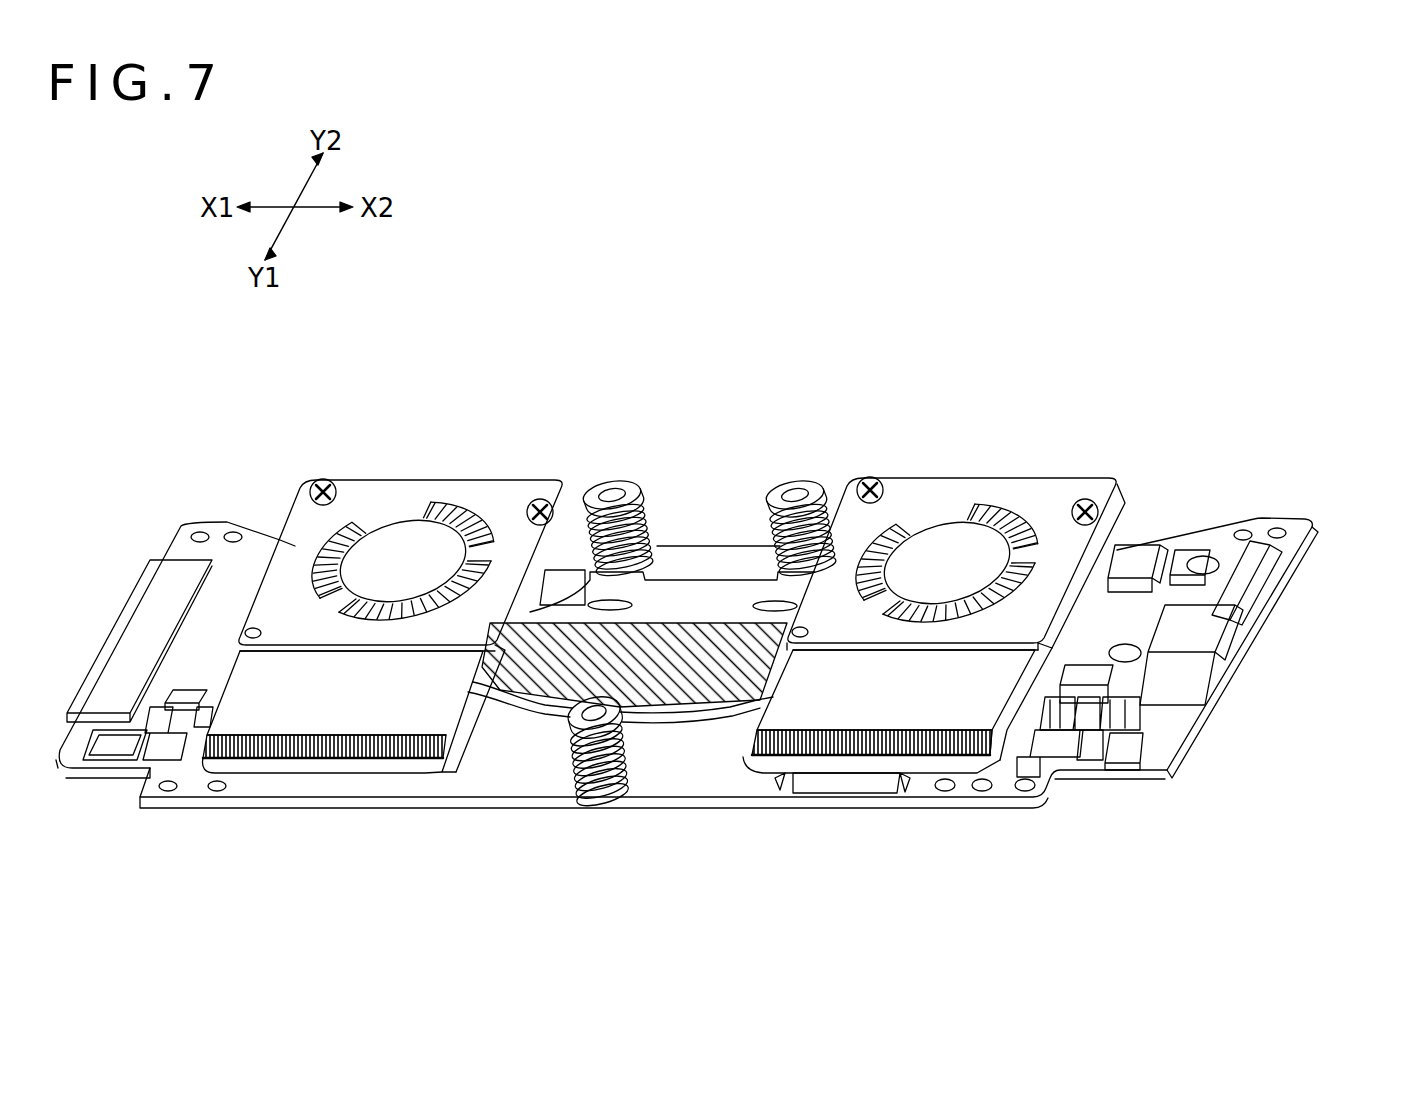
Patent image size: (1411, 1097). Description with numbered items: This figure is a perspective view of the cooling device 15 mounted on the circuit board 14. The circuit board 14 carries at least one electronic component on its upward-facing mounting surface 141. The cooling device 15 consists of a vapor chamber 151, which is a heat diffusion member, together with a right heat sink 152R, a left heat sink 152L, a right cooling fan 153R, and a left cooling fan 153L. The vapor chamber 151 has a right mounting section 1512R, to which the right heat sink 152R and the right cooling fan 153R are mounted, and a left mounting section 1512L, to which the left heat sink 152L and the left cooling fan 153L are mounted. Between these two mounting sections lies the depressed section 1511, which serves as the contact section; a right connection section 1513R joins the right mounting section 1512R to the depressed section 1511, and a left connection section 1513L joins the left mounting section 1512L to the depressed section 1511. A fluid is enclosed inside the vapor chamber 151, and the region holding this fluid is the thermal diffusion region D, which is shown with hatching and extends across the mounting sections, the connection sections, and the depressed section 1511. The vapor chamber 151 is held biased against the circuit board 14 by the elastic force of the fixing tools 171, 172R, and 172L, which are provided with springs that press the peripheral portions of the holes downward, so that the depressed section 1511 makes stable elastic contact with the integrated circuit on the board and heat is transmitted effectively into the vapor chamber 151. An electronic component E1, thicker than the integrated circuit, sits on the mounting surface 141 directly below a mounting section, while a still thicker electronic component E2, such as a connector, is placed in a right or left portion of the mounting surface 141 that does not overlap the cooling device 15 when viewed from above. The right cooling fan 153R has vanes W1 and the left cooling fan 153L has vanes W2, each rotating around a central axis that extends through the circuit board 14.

The circuit board 14 is at (1277, 612).
The cooling device 15 is at (1020, 479).
The mounting surface 141 is at (1117, 562).
The vapor chamber 151 is at (723, 572).
The depressed section 1511 is at (634, 592).
The right mounting section 1512R is at (290, 778).
The left mounting section 1512L is at (822, 778).
The right connection section 1513R is at (553, 686).
The left connection section 1513L is at (755, 686).
The right heat sink 152R is at (368, 694).
The left heat sink 152L is at (960, 700).
The right cooling fan 153R is at (400, 563).
The left cooling fan 153L is at (956, 502).
The fixing tool 171 is at (568, 805).
The fixing tool 172R is at (647, 483).
The fixing tool 172L is at (838, 483).
The vanes W1 is at (373, 522).
The vanes W2 is at (923, 523).
The electronic component E1 is at (871, 790).
The electronic component E2 is at (1198, 682).
The thermal diffusion region D is at (615, 679).